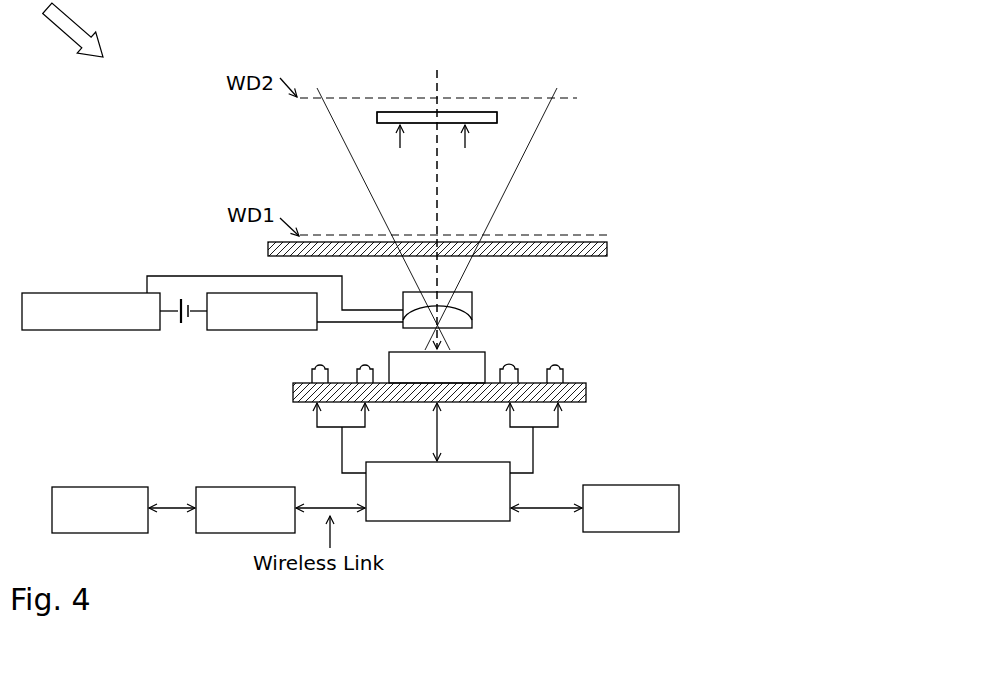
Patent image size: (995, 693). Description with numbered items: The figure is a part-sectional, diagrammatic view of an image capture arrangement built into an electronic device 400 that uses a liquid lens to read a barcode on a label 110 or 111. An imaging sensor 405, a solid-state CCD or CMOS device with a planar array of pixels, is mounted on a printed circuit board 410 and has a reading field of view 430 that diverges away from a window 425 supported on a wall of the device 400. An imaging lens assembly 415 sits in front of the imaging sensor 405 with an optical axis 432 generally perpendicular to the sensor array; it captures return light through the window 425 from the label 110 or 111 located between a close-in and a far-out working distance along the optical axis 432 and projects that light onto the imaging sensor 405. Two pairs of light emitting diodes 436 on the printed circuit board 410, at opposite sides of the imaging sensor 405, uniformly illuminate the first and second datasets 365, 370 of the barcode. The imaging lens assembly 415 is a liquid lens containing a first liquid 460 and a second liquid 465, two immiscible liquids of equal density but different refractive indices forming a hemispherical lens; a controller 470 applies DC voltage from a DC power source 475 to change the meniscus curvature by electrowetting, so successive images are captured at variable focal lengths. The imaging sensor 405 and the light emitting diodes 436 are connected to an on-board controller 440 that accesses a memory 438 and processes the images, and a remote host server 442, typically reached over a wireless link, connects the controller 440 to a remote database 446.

The electronic device 400 is at (104, 33).
The optical axis 432 is at (440, 80).
The label 110 is at (468, 110).
The label 111 is at (527, 78).
The first dataset 365 is at (403, 148).
The second dataset 370 is at (469, 148).
The reading field of view 430 is at (524, 155).
The window 425 is at (265, 250).
The imaging lens assembly 415 is at (401, 294).
The first liquid 460 is at (462, 301).
The second liquid 465 is at (453, 320).
The controller 470 is at (217, 290).
The DC power source 475 is at (42, 291).
The imaging sensor 405 is at (482, 349).
The light emitting diodes 436 is at (318, 364).
The printed circuit board 410 is at (588, 392).
The controller 440 is at (514, 489).
The memory 438 is at (658, 483).
The remote host server 442 is at (219, 485).
The remote database 446 is at (74, 485).